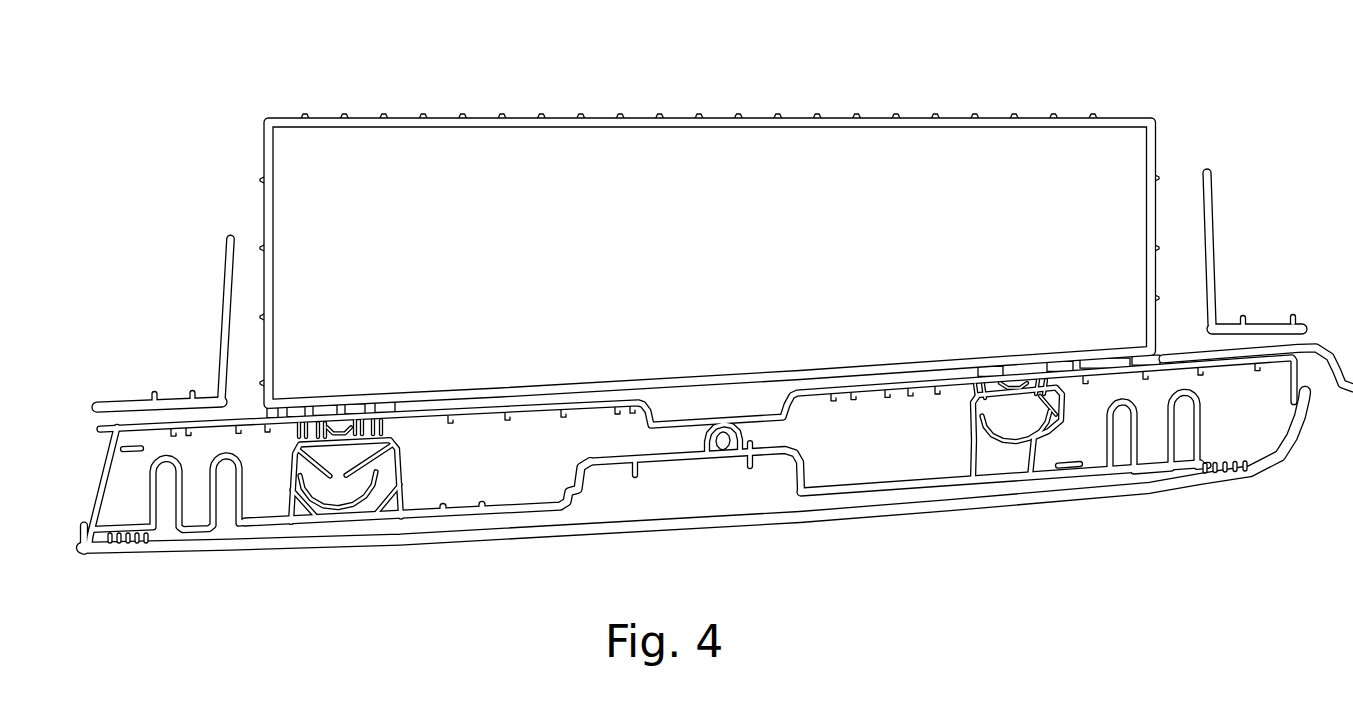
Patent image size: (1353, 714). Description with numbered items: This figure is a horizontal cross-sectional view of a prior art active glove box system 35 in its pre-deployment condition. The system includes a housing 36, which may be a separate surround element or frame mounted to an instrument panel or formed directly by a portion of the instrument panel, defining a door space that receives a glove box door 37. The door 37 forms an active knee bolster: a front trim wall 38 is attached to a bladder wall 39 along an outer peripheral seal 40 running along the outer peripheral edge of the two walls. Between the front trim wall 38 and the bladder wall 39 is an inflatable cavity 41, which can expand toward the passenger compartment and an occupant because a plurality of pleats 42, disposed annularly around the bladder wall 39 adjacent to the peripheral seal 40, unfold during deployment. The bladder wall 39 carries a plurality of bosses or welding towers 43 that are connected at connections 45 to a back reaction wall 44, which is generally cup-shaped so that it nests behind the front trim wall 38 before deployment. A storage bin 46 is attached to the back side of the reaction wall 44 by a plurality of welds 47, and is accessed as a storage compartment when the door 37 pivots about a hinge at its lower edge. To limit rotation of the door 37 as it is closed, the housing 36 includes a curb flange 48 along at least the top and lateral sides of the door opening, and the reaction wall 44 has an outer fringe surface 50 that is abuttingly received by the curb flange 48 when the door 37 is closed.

The active glove box system 35 is at (236, 89).
The housing 36 is at (216, 294).
The glove box door 37 is at (64, 560).
The front trim wall 38 is at (431, 539).
The bladder wall 39 is at (527, 507).
The outer peripheral seal 40 is at (124, 546).
The inflatable cavity 41 is at (681, 487).
The pleats 42 is at (1207, 411).
The welding towers 43 is at (298, 490).
The back reaction wall 44 is at (808, 396).
The connection 45 is at (386, 432).
The storage bin 46 is at (730, 109).
The welds 47 is at (333, 407).
The curb flange 48 is at (96, 410).
The outer fringe surface 50 is at (117, 427).